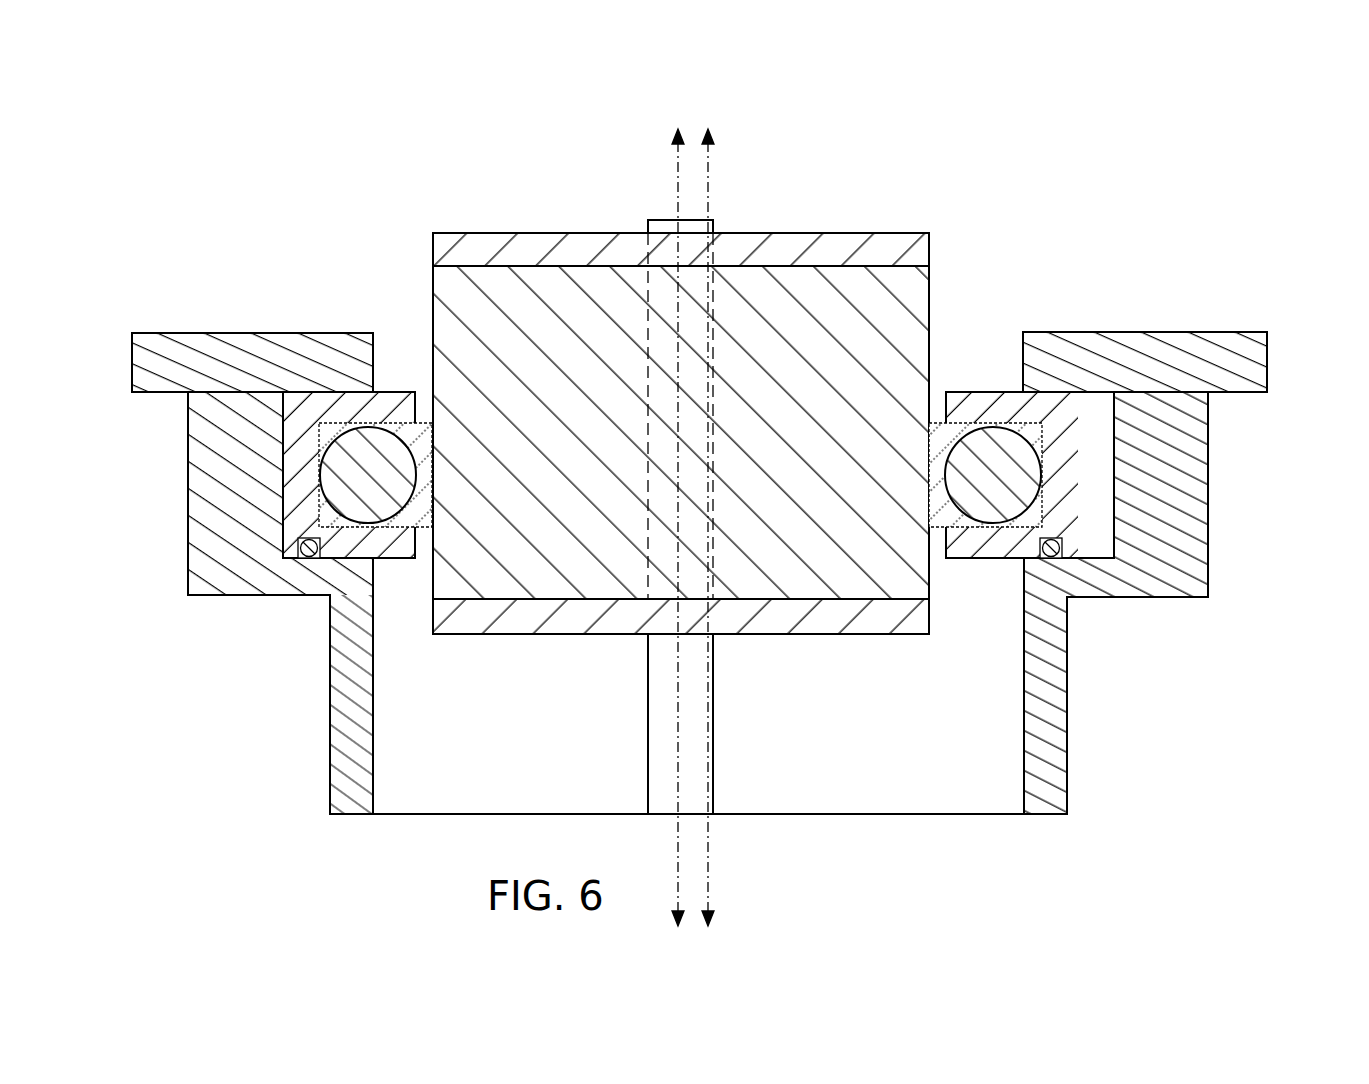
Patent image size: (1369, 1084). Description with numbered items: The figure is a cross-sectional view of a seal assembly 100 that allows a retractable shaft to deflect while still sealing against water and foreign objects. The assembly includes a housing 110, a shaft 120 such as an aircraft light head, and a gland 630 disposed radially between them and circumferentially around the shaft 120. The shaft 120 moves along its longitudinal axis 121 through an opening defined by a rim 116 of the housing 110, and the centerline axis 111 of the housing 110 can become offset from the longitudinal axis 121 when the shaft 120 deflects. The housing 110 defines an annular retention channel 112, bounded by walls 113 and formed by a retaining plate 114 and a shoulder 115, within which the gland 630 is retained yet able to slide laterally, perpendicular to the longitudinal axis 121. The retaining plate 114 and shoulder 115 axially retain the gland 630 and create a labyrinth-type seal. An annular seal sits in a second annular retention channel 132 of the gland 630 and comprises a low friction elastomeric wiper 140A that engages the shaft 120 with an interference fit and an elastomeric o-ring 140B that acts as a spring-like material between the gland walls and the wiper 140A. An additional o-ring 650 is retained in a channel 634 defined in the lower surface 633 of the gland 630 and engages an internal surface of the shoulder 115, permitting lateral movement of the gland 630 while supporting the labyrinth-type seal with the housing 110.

The seal assembly 100 is at (303, 134).
The housing 110 is at (1187, 452).
The centerline axis 111 is at (708, 183).
The annular retention channel 112 is at (1090, 462).
The walls 113 is at (1113, 520).
The retaining plate 114 is at (232, 355).
The shoulder 115 is at (205, 580).
The rim 116 is at (1047, 350).
The shaft 120 is at (495, 295).
The longitudinal axis 121 is at (677, 190).
The second annular retention channel 132 is at (1007, 590).
The elastomeric wiper 140A is at (415, 512).
The elastomeric o-ring 140B is at (333, 480).
The gland 630 is at (398, 395).
The lower surface 633 is at (400, 560).
The channel 634 is at (306, 552).
The o-ring 650 is at (312, 560).